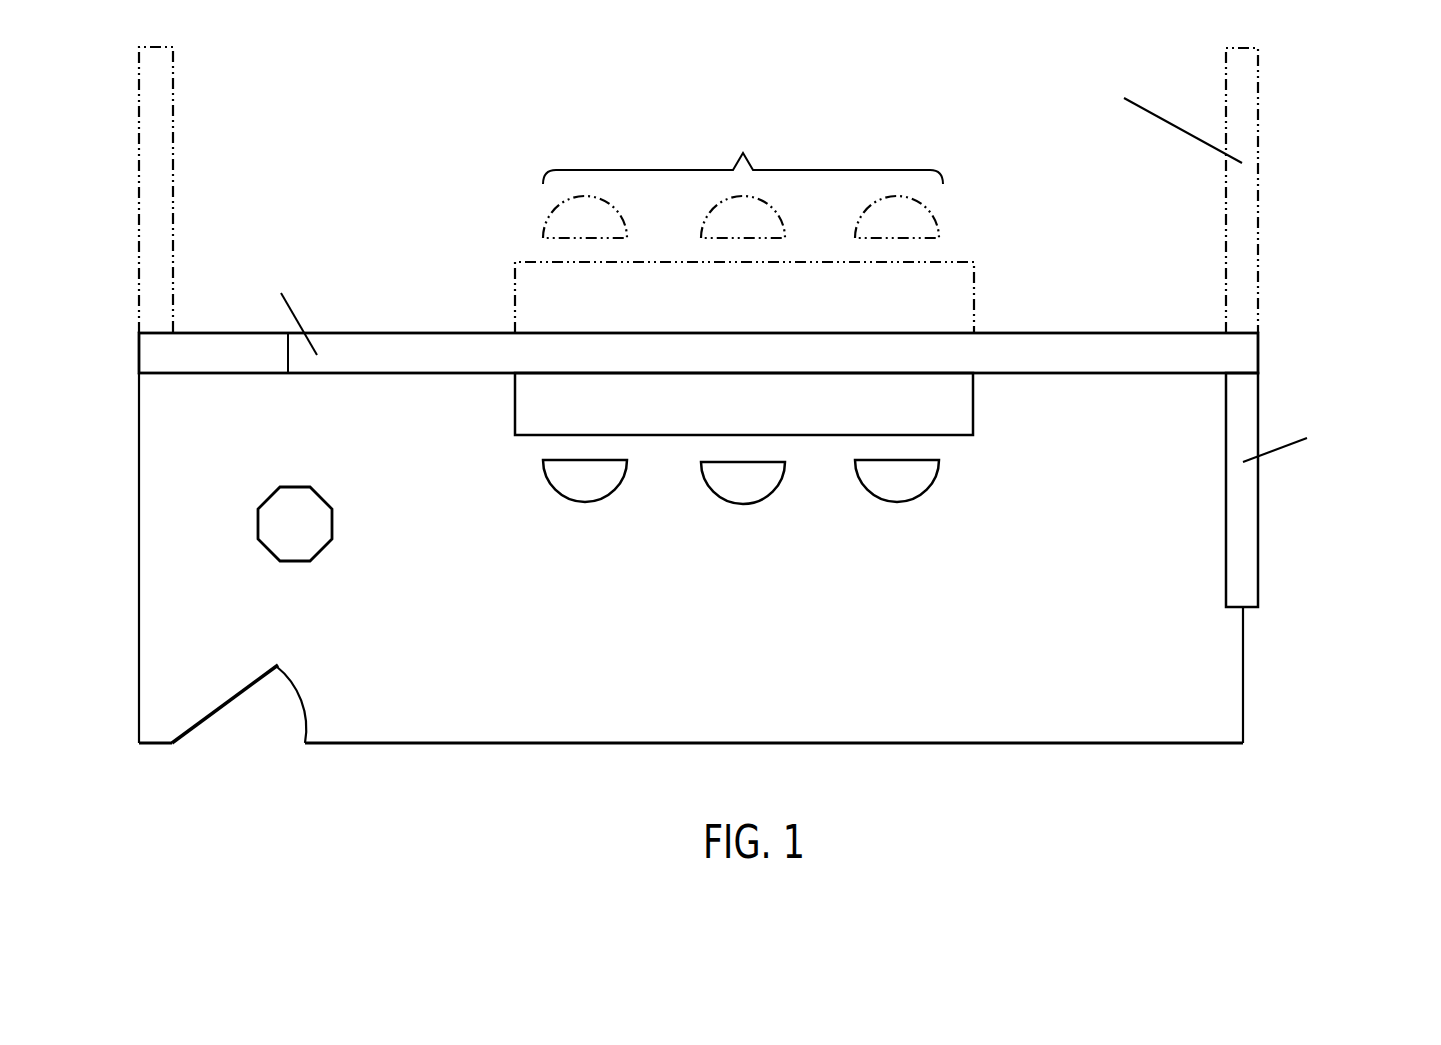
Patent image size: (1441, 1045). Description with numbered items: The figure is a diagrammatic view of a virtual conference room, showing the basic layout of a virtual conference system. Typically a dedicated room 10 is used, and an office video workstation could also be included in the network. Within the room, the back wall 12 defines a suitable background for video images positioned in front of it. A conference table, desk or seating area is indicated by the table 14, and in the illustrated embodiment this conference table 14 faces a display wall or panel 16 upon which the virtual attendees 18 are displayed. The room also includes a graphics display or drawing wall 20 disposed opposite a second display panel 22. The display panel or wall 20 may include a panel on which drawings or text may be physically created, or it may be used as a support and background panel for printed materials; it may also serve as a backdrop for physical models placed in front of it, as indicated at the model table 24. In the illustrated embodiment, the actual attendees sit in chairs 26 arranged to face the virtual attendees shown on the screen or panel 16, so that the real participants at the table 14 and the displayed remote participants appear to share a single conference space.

The dedicated room 10 is at (1243, 680).
The back wall 12 is at (747, 742).
The conference table 14 is at (953, 398).
The display wall or panel 16 is at (1242, 355).
The virtual attendees 18 is at (945, 252).
The graphics display or drawing wall 20 is at (139, 512).
The second display panel 22 is at (1246, 535).
The model table 24 is at (318, 517).
The chairs 26 is at (593, 486).